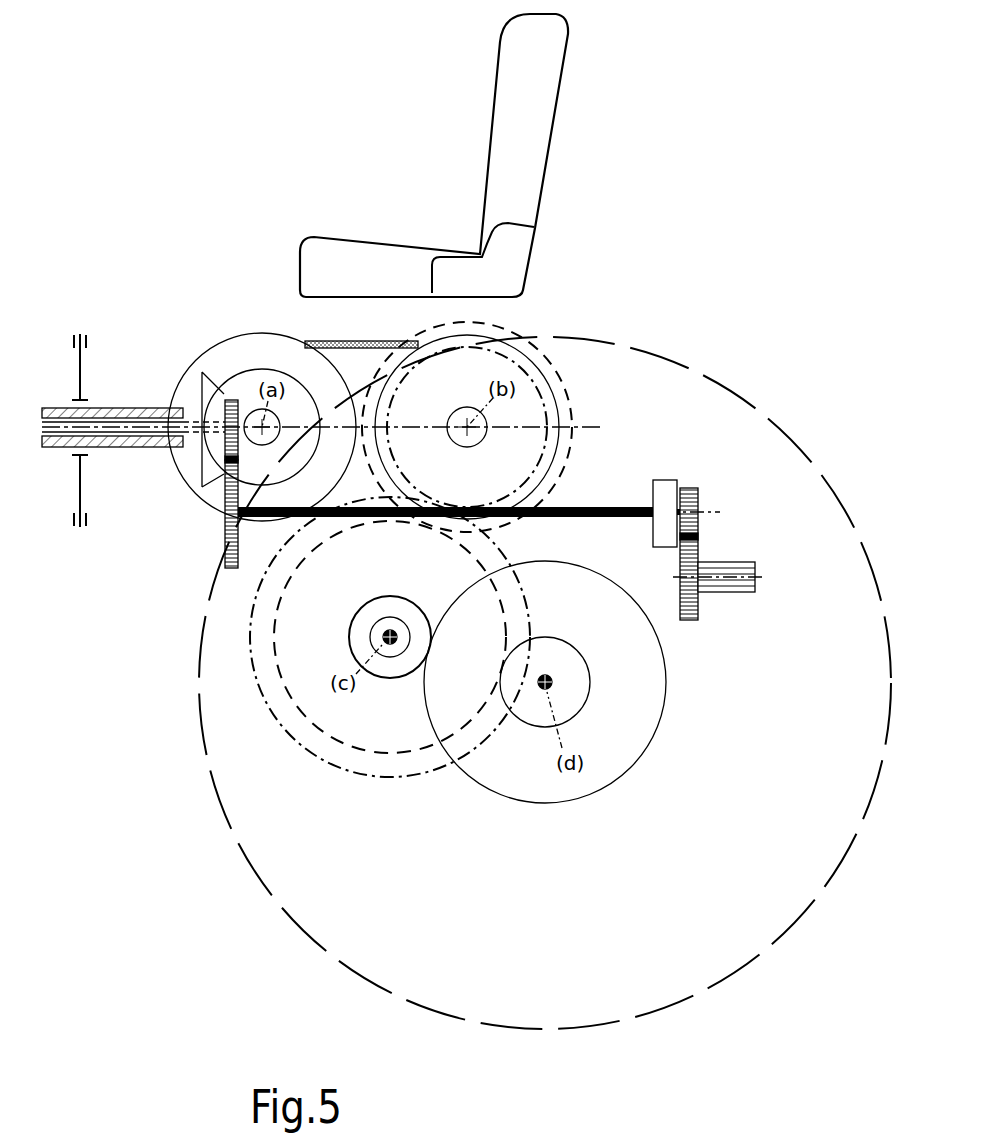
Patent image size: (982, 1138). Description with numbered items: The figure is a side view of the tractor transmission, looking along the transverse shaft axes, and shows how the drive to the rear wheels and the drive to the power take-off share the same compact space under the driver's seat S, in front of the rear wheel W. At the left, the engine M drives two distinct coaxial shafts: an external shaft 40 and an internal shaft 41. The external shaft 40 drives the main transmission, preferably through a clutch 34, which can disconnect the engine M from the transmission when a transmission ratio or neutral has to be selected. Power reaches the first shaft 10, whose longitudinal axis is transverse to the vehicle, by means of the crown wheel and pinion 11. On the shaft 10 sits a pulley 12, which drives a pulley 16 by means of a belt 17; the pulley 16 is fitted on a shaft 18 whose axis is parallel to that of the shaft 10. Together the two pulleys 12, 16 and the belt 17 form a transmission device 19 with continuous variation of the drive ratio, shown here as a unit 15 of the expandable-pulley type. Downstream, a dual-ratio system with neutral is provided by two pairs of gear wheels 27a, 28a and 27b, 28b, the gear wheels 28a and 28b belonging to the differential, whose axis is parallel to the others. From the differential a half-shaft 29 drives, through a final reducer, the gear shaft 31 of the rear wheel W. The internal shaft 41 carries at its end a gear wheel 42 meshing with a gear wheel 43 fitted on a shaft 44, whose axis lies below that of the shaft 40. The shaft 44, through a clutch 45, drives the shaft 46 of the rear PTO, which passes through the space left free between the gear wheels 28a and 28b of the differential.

The first shaft 10 is at (273, 423).
The crown wheel and pinion 11 is at (196, 480).
The pulley 12 is at (228, 350).
The driven pulley unit 15 is at (514, 315).
The pulley 16 is at (520, 358).
The belt 17 is at (358, 341).
The shaft 18 is at (455, 420).
The transmission device 19 is at (339, 330).
The gear wheel 27a is at (618, 383).
The gear wheel 27b is at (619, 460).
The gear wheel 28a is at (318, 727).
The gear wheel 28b is at (503, 543).
The half-shaft 29 is at (377, 637).
The gear shaft 31 is at (573, 707).
The clutch 34 is at (80, 490).
The external shaft 40 is at (146, 412).
The internal shaft 41 is at (108, 421).
The gear wheel 42 is at (232, 400).
The gear wheel 43 is at (225, 550).
The shaft 44 is at (600, 520).
The clutch 45 is at (666, 487).
The shaft of the rear PTO 46 is at (740, 567).
The seat S is at (537, 157).
The engine M is at (55, 376).
The rear wheels W is at (737, 433).
The power take-off PTO is at (762, 584).